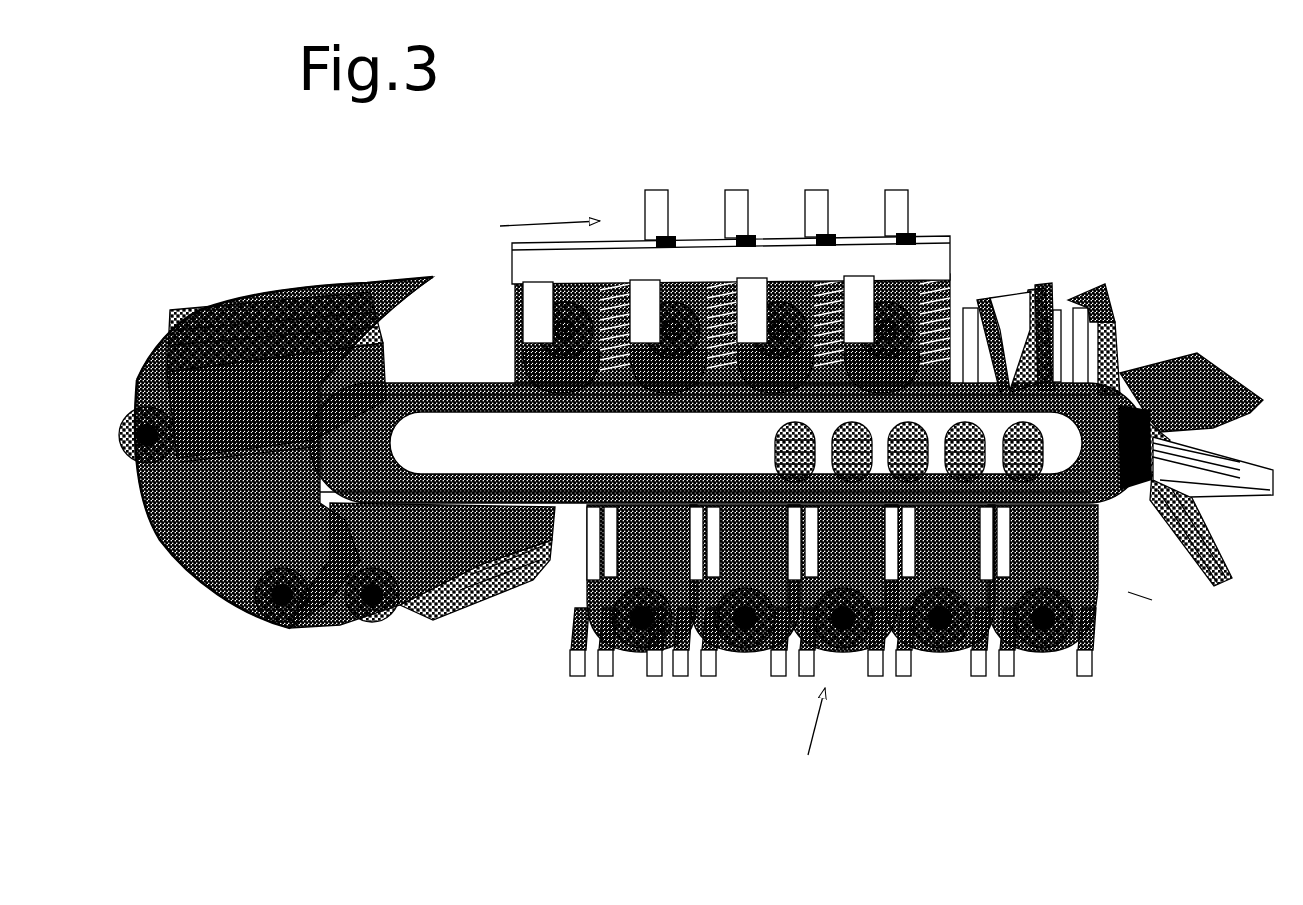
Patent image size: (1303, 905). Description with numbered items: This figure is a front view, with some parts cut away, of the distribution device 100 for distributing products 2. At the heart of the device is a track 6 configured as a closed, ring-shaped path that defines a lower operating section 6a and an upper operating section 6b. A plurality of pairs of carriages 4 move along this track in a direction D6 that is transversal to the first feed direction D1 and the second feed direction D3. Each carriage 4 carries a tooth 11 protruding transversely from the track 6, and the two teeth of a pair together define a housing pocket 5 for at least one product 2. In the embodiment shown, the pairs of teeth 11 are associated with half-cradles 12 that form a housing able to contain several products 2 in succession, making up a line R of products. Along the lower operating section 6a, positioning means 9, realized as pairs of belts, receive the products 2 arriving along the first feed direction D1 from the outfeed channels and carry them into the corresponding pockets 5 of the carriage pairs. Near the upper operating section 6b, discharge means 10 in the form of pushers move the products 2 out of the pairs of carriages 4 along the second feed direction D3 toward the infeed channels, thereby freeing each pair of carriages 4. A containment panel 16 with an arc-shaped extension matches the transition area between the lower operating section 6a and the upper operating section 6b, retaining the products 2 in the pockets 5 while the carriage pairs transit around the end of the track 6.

The containment panel 16 is at (198, 324).
The track 6 is at (578, 506).
The lower operating section 6a is at (634, 512).
The upper operating section 6b is at (479, 352).
The discharge means 10 is at (758, 314).
The product 2 is at (975, 300).
The carriage 4 is at (1015, 305).
The housing pocket 5 is at (1043, 300).
The tooth 11 is at (1102, 344).
The half-cradle 12 is at (1207, 384).
The positioning means 9 is at (651, 662).
The distribution device 100 is at (1130, 595).
The line of products R is at (307, 624).
The second feed direction D3 is at (547, 226).
The direction of carriage movement D6 is at (1150, 428).
The first feed direction D1 is at (808, 755).